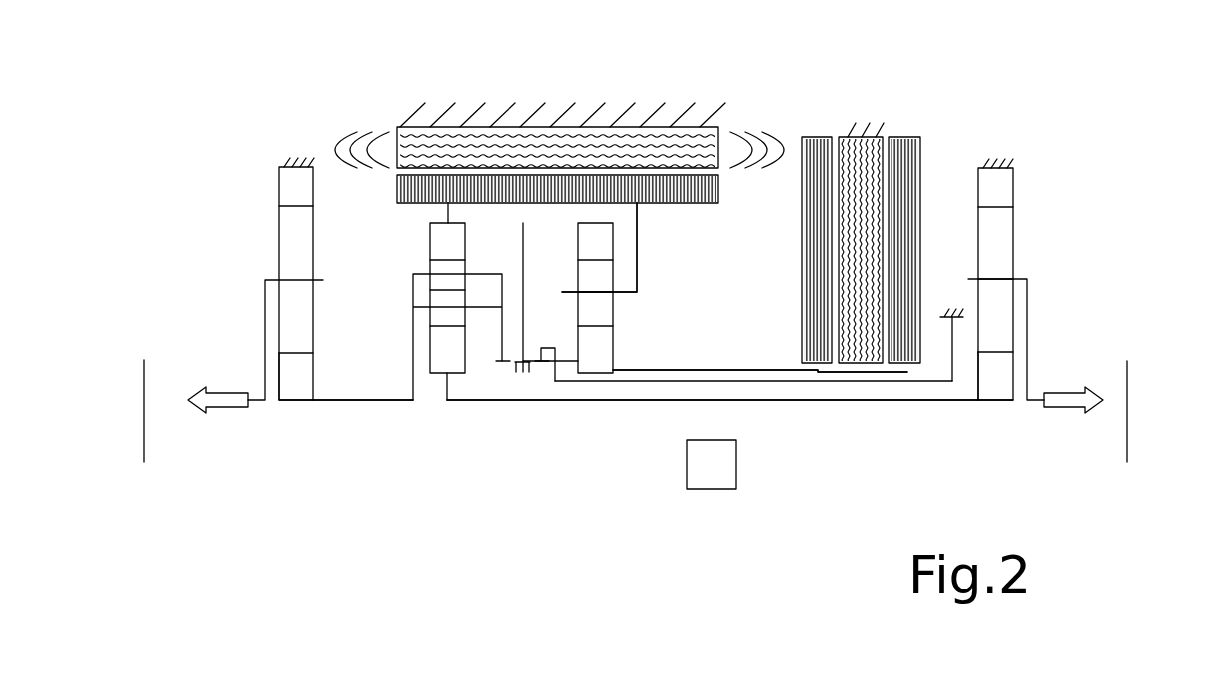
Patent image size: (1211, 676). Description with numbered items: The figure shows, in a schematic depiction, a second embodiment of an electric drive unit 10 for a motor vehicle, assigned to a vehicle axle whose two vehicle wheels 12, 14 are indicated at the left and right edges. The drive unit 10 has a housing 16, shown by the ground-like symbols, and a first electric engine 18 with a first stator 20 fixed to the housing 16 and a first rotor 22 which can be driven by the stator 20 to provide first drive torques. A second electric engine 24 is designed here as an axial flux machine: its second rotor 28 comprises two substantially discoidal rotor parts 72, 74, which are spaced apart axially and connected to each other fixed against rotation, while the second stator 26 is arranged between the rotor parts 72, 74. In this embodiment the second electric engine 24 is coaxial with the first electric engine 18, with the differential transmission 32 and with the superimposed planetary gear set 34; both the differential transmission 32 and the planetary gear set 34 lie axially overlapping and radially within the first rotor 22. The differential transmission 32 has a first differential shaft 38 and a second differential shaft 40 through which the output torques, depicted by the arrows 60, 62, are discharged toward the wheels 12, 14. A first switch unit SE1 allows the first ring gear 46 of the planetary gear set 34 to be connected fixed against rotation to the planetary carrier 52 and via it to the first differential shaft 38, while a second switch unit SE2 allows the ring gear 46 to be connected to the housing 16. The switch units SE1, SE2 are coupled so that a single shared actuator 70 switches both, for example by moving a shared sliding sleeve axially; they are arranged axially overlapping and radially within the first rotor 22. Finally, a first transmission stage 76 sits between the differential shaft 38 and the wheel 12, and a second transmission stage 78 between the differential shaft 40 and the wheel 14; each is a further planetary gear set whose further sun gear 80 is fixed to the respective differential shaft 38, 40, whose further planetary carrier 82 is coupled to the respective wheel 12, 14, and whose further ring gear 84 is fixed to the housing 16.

The electric drive unit 10 is at (935, 126).
The first vehicle wheel 12 is at (146, 437).
The second vehicle wheel 14 is at (1128, 417).
The housing 16 is at (527, 118).
The first electric engine 18 is at (706, 127).
The first stator 20 is at (430, 147).
The first rotor 22 is at (702, 204).
The second electric engine 24 is at (877, 148).
The second stator 26 is at (860, 150).
The second rotor 28 is at (893, 377).
The differential transmission 32 is at (455, 216).
The superimposed planetary gear set 34 is at (598, 216).
The first differential shaft 38 is at (378, 400).
The second differential shaft 40 is at (652, 400).
The first ring gear 46 is at (603, 237).
The planetary carrier 52 is at (476, 274).
The arrow 60 is at (229, 402).
The arrow 62 is at (1066, 400).
The actuator 70 is at (722, 489).
The first rotor part 72 is at (802, 270).
The second rotor part 74 is at (923, 157).
The first transmission stage 76 is at (280, 168).
The second transmission stage 78 is at (1005, 234).
The further sun gear 80 is at (300, 390).
The further planetary carrier 82 is at (273, 280).
The further ring gear 84 is at (300, 168).
The first switch unit SE1 is at (510, 372).
The second switch unit SE2 is at (537, 372).